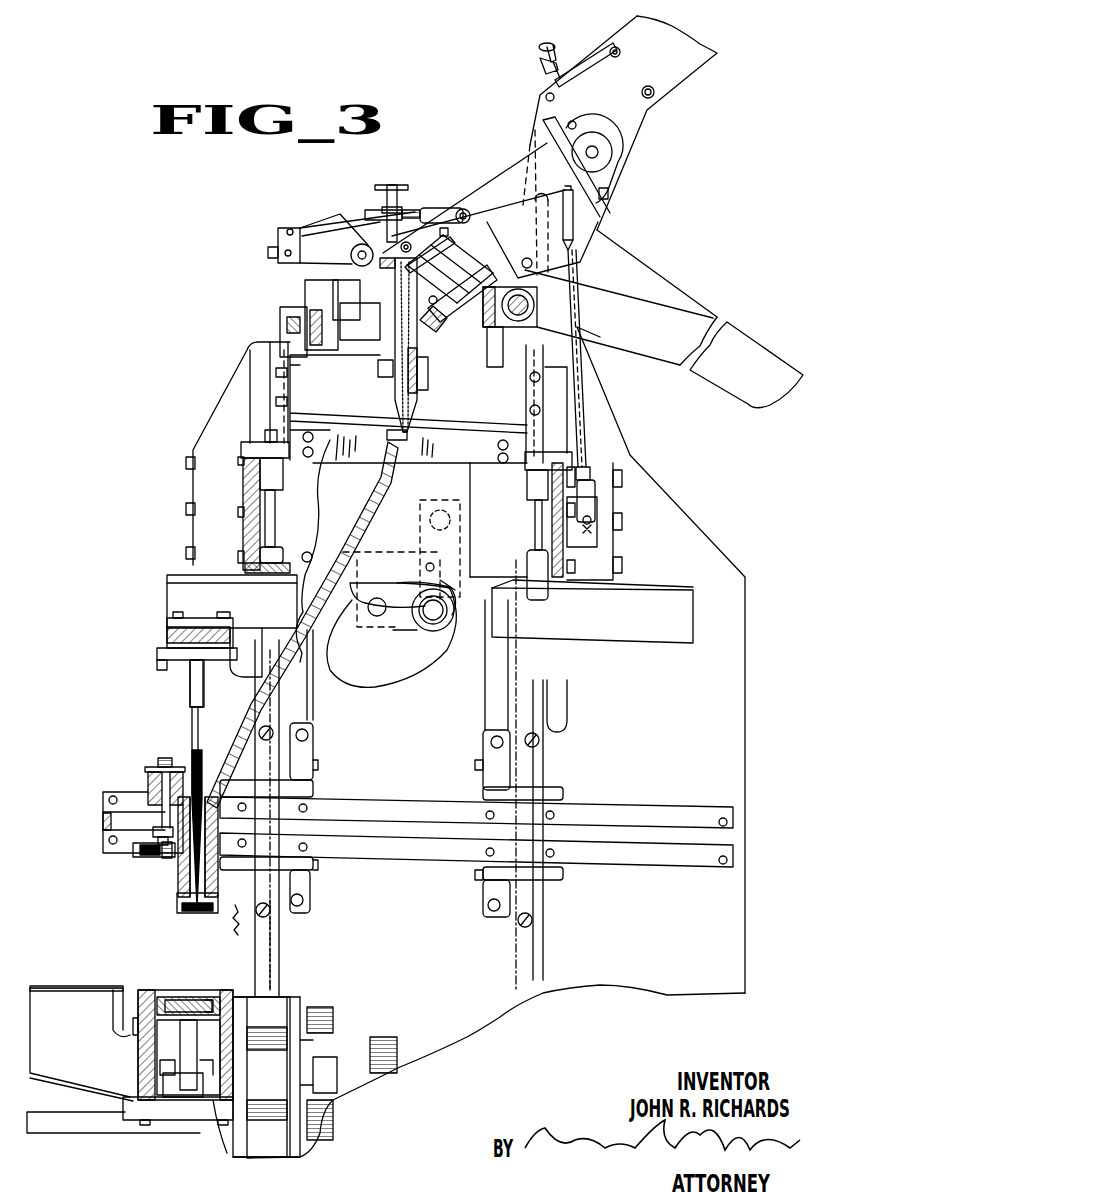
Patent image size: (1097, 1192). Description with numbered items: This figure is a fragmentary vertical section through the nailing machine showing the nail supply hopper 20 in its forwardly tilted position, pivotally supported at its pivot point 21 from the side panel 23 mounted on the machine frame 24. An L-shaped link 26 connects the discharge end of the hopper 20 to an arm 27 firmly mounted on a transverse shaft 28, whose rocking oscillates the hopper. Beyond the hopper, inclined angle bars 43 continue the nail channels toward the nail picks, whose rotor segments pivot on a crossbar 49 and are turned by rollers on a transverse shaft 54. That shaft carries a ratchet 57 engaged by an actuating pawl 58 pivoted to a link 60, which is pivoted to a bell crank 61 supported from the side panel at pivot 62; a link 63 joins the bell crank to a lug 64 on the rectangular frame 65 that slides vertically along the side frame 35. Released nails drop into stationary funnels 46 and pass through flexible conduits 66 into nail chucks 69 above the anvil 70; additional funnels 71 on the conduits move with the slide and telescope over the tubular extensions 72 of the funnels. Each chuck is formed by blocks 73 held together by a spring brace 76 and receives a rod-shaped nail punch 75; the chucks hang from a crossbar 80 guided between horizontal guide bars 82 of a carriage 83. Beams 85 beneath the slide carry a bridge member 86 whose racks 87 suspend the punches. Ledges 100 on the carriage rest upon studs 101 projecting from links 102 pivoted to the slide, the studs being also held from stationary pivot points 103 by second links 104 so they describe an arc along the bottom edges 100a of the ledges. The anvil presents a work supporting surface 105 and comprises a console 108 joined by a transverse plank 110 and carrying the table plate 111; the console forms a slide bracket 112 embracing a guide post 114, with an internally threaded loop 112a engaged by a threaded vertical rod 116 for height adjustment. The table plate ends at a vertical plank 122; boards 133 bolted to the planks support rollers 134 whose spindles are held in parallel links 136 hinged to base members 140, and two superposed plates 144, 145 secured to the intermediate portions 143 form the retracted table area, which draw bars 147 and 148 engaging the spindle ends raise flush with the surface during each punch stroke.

The nail supply hopper 20 is at (697, 59).
The pivot point 21 is at (598, 152).
The side panel 23 is at (516, 174).
The machine frame 24 is at (304, 346).
The L-shaped link 26 is at (543, 303).
The arm 27 is at (553, 333).
The transverse shaft 28 is at (532, 313).
The side frame 35 is at (660, 763).
The angle bars 43 is at (468, 230).
The funnel 46 is at (410, 293).
The crossbar 49 is at (330, 318).
The transverse shaft 54 is at (352, 255).
The ratchet 57 is at (365, 247).
The actuating pawl 58 is at (335, 248).
The link 60 is at (310, 225).
The bell crank 61 is at (513, 210).
The pivot 62 is at (533, 263).
The link 63 is at (580, 393).
The lug 64 is at (593, 543).
The rectangular frame 65 is at (250, 463).
The flexible tubular conduits 66 is at (205, 740).
The nail chucks 69 is at (178, 882).
The anvil 70 is at (87, 985).
The additional funnels 71 is at (398, 410).
The tubular extensions 72 is at (403, 387).
The chuck blocks 73 is at (183, 865).
The nail punches 75 is at (232, 747).
The spring brace 76 is at (148, 852).
The crossbar 80 is at (148, 783).
The guide bars 82 is at (405, 853).
The carriage 83 is at (495, 670).
The beams 85 is at (672, 634).
The bridge member 86 is at (198, 630).
The racks 87 is at (160, 660).
The ledges 100 is at (375, 582).
The bottom edges of ledges 100a is at (465, 588).
The studs 101 is at (438, 624).
The links 102 is at (421, 511).
The pivot points 103 is at (377, 612).
The second links 104 is at (417, 630).
The work supporting surface 105 is at (32, 985).
The console 108 is at (53, 1125).
The transverse plank 110 is at (240, 997).
The anvil table plate 111 is at (82, 987).
The slide bracket 112 is at (275, 1098).
The internally threaded loop 112a is at (328, 1082).
The guide post 114 is at (270, 935).
The threaded vertical rod 116 is at (320, 1010).
The vertical plank 122 is at (133, 1025).
The boards 133 is at (143, 1110).
The rollers 134 is at (182, 1082).
The parallel links 136 is at (215, 1100).
The base members 140 is at (187, 1043).
The intermediate portions 143 is at (227, 995).
The lower horizontal plate 144 is at (217, 997).
The upper horizontal plate 145 is at (167, 995).
The draw bar 147 is at (195, 1122).
The draw bar 148 is at (213, 1095).